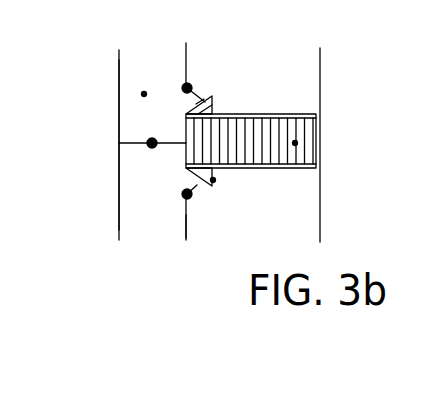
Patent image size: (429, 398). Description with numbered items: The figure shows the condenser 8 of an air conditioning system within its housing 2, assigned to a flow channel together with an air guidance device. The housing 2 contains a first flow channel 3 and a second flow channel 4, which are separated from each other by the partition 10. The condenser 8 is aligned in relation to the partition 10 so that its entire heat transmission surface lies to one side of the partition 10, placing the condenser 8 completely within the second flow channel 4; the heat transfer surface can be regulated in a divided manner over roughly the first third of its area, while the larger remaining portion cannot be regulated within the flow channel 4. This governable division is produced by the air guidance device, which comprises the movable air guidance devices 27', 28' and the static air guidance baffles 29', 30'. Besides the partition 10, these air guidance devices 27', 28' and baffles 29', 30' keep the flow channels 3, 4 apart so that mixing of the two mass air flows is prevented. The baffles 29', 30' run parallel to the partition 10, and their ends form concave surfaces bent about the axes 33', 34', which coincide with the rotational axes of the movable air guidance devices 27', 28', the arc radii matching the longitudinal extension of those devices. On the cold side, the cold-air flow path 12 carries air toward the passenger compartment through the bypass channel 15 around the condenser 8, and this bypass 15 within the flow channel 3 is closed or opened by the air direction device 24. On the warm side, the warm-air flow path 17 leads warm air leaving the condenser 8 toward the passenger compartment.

The housing 2 is at (118, 50).
The first flow channel 3 is at (98, 82).
The second flow channel 4 is at (333, 69).
The condenser 8 is at (295, 143).
The partition 10 is at (186, 226).
The cold-air flow path 12 is at (165, 70).
The bypass channel 15 is at (144, 94).
The warm-air flow path 17 is at (287, 70).
The air direction device 24 is at (135, 143).
The air guidance device 27' is at (238, 208).
The air guidance device 28' is at (168, 113).
The air guidance baffle 29' is at (238, 186).
The air guidance baffle 30' is at (238, 95).
The axis 33' is at (157, 214).
The axis 34' is at (212, 71).